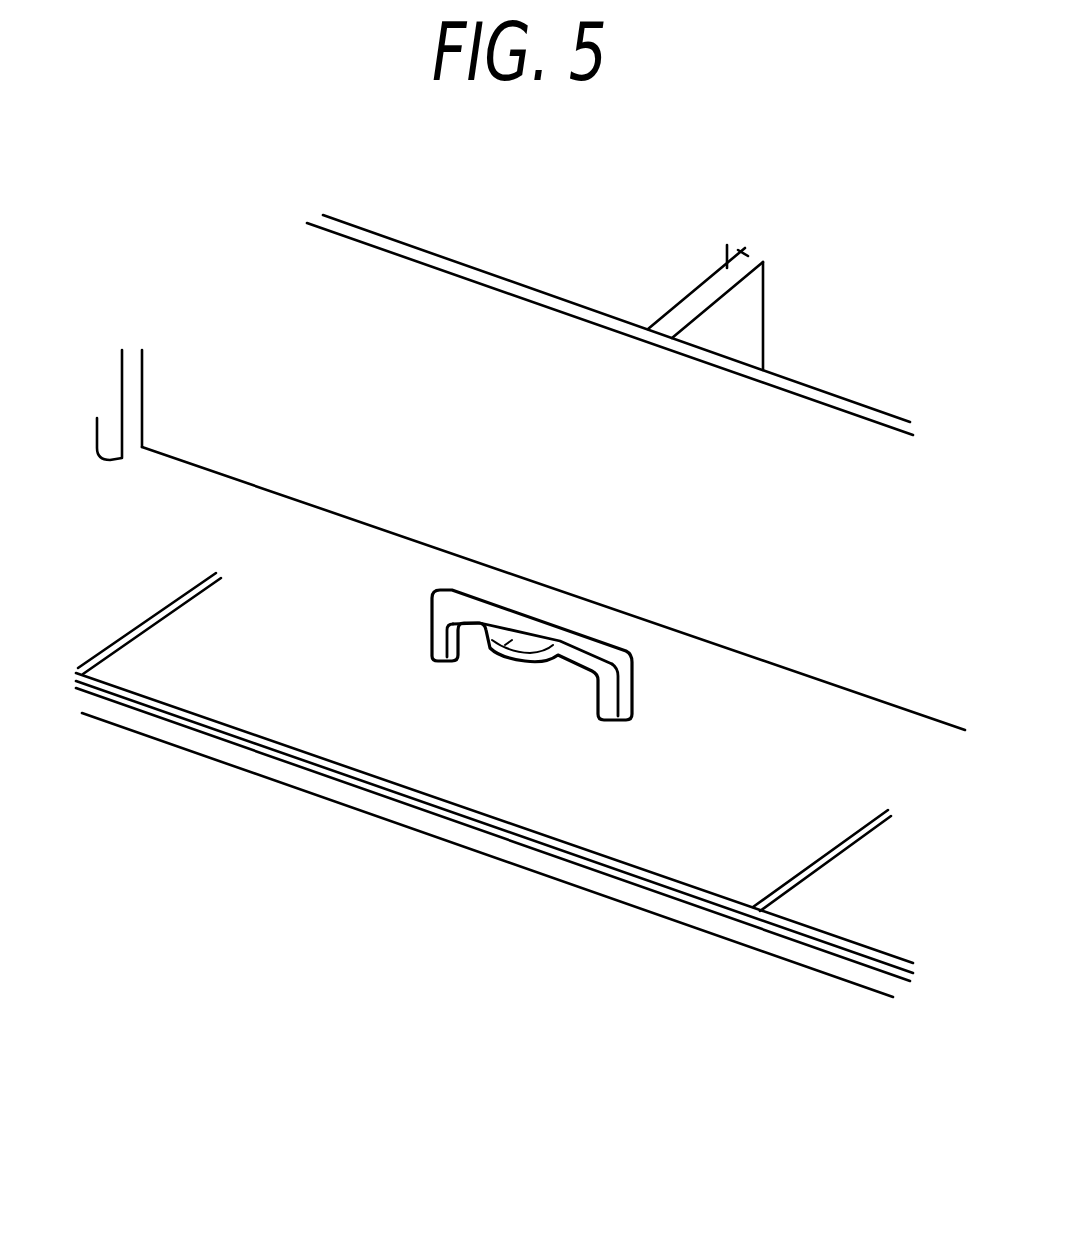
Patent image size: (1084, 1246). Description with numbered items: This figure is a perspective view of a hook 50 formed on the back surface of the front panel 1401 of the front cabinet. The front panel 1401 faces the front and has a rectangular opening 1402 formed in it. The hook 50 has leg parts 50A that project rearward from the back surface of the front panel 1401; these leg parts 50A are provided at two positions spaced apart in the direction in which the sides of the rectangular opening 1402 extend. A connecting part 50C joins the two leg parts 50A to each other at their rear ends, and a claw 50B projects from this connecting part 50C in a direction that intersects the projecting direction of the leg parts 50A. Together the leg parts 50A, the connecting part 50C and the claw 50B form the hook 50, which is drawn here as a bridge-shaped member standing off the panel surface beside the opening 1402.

The hook 50 is at (520, 548).
The leg part 50A is at (420, 632).
The claw 50B is at (492, 655).
The connecting part 50C is at (538, 625).
The front panel 1401 is at (750, 835).
The rectangular opening 1402 is at (171, 735).